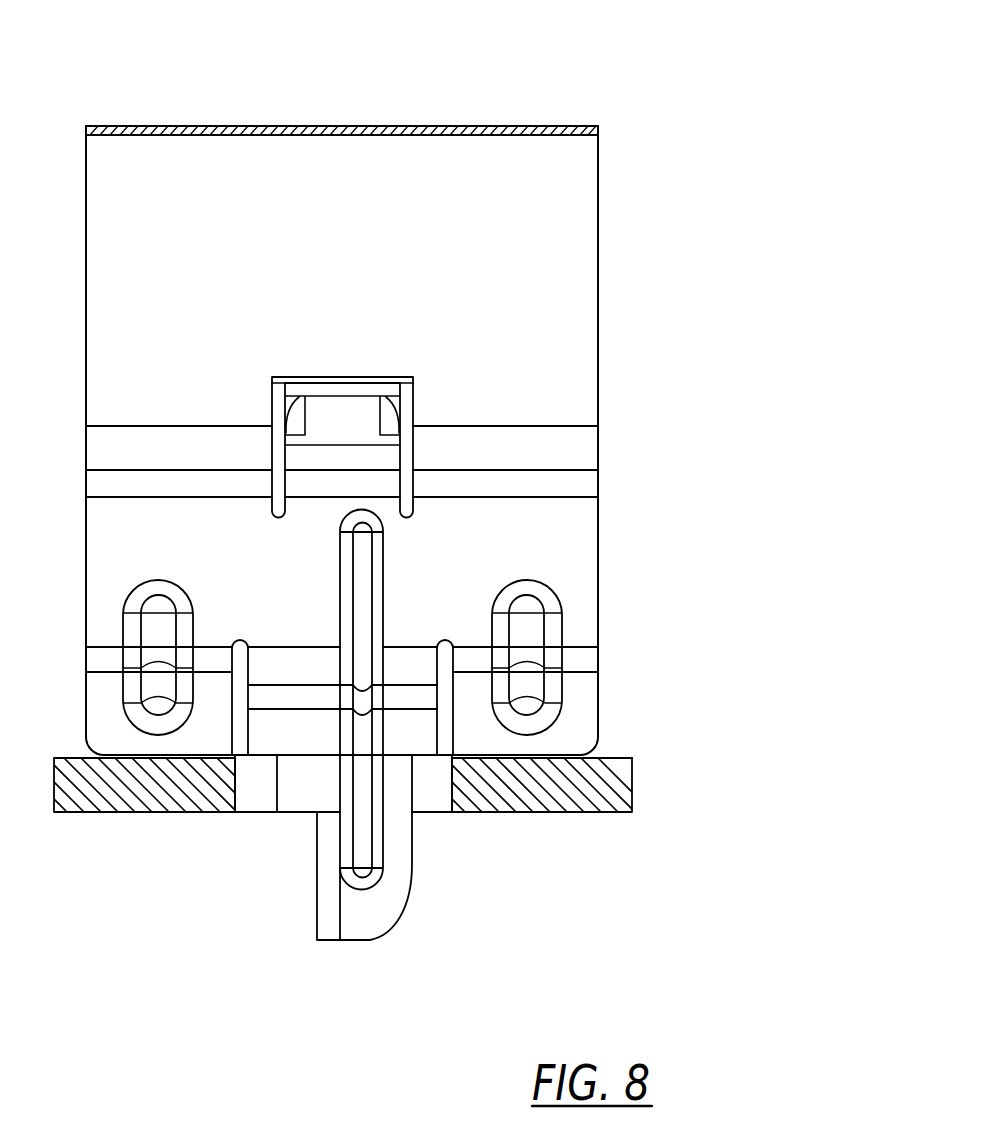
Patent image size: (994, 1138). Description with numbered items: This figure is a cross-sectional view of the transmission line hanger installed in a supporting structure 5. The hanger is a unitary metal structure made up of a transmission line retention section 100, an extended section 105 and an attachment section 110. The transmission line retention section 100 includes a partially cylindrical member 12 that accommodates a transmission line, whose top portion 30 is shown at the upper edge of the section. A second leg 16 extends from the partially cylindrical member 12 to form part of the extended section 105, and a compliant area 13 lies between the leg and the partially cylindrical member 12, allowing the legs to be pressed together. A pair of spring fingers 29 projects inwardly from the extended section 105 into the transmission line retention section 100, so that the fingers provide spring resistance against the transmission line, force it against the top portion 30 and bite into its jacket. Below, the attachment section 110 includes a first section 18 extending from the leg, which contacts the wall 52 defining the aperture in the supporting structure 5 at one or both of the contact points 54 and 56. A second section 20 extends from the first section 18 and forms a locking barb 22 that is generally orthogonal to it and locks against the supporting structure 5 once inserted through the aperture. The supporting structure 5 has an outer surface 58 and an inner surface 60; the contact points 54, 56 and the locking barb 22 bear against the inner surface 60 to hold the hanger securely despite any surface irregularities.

The supporting structure 5 is at (633, 792).
The partially cylindrical member 12 is at (342, 125).
The compliant area 13 is at (585, 447).
The second leg 16 is at (600, 542).
The first section 18 is at (312, 757).
The second section 20 is at (357, 930).
The locking barb 22 is at (323, 912).
The spring fingers 29 is at (347, 410).
The top portion 30 is at (400, 125).
The wall 52 is at (240, 795).
The contact point 54 is at (273, 793).
The contact point 56 is at (415, 785).
The outer surface 58 is at (618, 758).
The inner surface 60 is at (545, 812).
The transmission line retention section 100 is at (700, 217).
The extended section 105 is at (700, 617).
The attachment section 110 is at (609, 860).